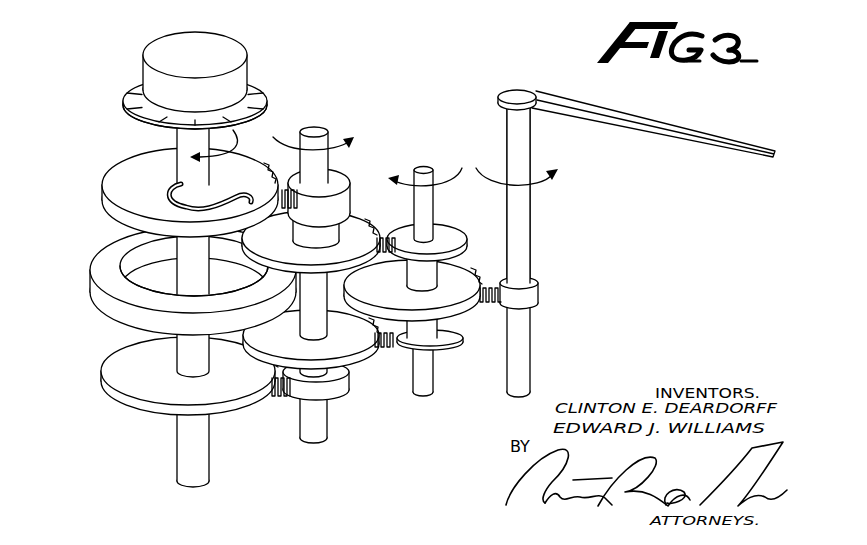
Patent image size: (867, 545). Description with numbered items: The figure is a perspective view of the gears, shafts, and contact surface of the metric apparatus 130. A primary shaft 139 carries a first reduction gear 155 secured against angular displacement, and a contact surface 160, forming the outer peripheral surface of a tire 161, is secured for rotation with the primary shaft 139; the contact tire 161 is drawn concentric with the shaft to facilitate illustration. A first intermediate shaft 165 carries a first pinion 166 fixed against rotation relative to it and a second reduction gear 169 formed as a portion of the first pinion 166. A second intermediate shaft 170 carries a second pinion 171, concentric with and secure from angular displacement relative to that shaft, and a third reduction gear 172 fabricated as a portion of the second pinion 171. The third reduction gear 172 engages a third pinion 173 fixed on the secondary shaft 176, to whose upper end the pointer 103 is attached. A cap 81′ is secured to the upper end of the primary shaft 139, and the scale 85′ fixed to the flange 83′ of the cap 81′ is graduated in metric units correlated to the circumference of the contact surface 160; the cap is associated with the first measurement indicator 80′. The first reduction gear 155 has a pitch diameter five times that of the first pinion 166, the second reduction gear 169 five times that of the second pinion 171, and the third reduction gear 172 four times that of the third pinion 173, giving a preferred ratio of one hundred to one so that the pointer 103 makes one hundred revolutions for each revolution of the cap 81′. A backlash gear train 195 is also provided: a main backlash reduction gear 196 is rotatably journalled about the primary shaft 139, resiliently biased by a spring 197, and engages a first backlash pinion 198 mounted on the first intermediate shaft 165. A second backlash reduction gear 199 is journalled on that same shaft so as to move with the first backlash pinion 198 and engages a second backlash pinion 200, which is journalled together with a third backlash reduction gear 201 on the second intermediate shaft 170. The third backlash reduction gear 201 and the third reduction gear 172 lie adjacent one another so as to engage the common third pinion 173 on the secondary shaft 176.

The first measurement indicator 80′ is at (188, 70).
The cap 81′ is at (227, 45).
The flange 83′ is at (128, 105).
The scale 85′ is at (260, 88).
The pointer 103 is at (638, 125).
The metric apparatus 130 is at (398, 85).
The primary shaft 139 is at (192, 458).
The first reduction gear 155 is at (134, 376).
The contact surface 160 is at (161, 260).
The tire 161 is at (113, 267).
The first intermediate shaft 165 is at (313, 425).
The first pinion 166 is at (343, 393).
The second reduction gear 169 is at (345, 336).
The second intermediate shaft 170 is at (424, 381).
The second pinion 171 is at (448, 333).
The third reduction gear 172 is at (468, 321).
The third pinion 173 is at (538, 291).
The pointer shaft 176 is at (514, 333).
The backlash gear train 195 is at (339, 175).
The main backlash reduction gear 196 is at (137, 175).
The spring 197 is at (231, 190).
The first backlash pinion 198 is at (348, 168).
The second backlash reduction gear 199 is at (346, 262).
The second backlash pinion 200 is at (436, 233).
The third backlash reduction gear 201 is at (476, 260).